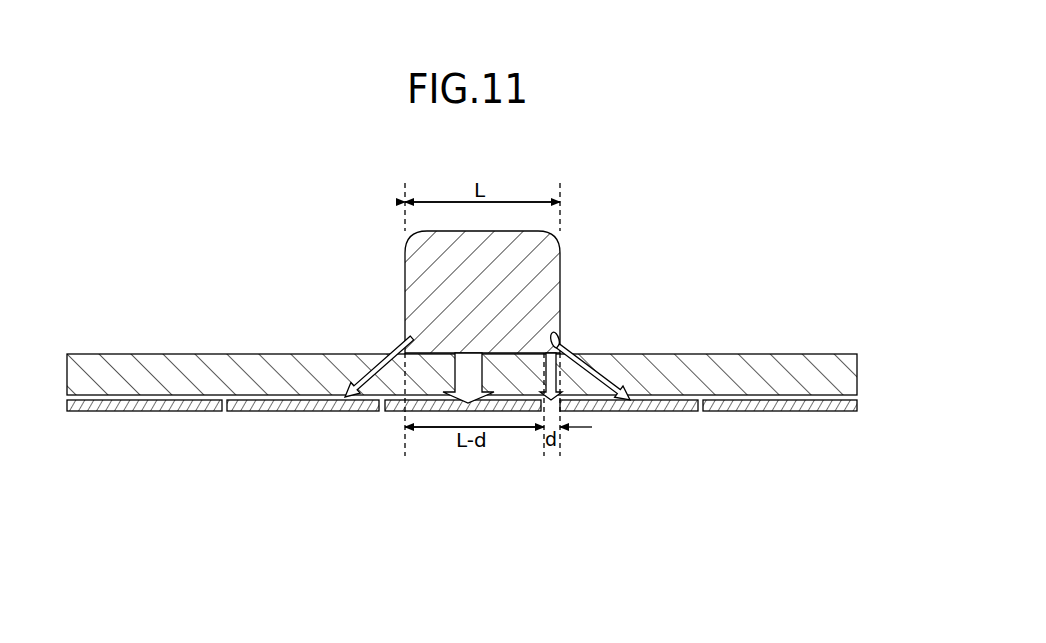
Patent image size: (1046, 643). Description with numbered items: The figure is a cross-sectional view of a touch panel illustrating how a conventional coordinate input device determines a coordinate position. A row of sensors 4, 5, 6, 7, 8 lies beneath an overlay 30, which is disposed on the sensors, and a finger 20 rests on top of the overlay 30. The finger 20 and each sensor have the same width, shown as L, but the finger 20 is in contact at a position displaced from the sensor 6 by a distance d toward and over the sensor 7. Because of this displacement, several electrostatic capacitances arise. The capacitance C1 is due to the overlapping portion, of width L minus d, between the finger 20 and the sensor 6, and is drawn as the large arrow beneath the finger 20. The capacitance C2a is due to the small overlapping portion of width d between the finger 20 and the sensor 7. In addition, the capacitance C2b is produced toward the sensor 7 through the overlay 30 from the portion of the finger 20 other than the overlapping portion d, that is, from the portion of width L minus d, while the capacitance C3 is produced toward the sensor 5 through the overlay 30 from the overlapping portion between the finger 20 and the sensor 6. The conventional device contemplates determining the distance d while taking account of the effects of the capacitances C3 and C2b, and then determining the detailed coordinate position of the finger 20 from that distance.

The finger 20 is at (557, 279).
The overlay 30 is at (746, 366).
The sensor 4 is at (128, 413).
The sensor 5 is at (292, 413).
The sensor 6 is at (392, 413).
The sensor 7 is at (629, 413).
The sensor 8 is at (787, 413).
The electrostatic capacitance C1 is at (470, 360).
The electrostatic capacitance C2a is at (558, 337).
The electrostatic capacitance C2b is at (612, 362).
The electrostatic capacitance C3 is at (398, 343).